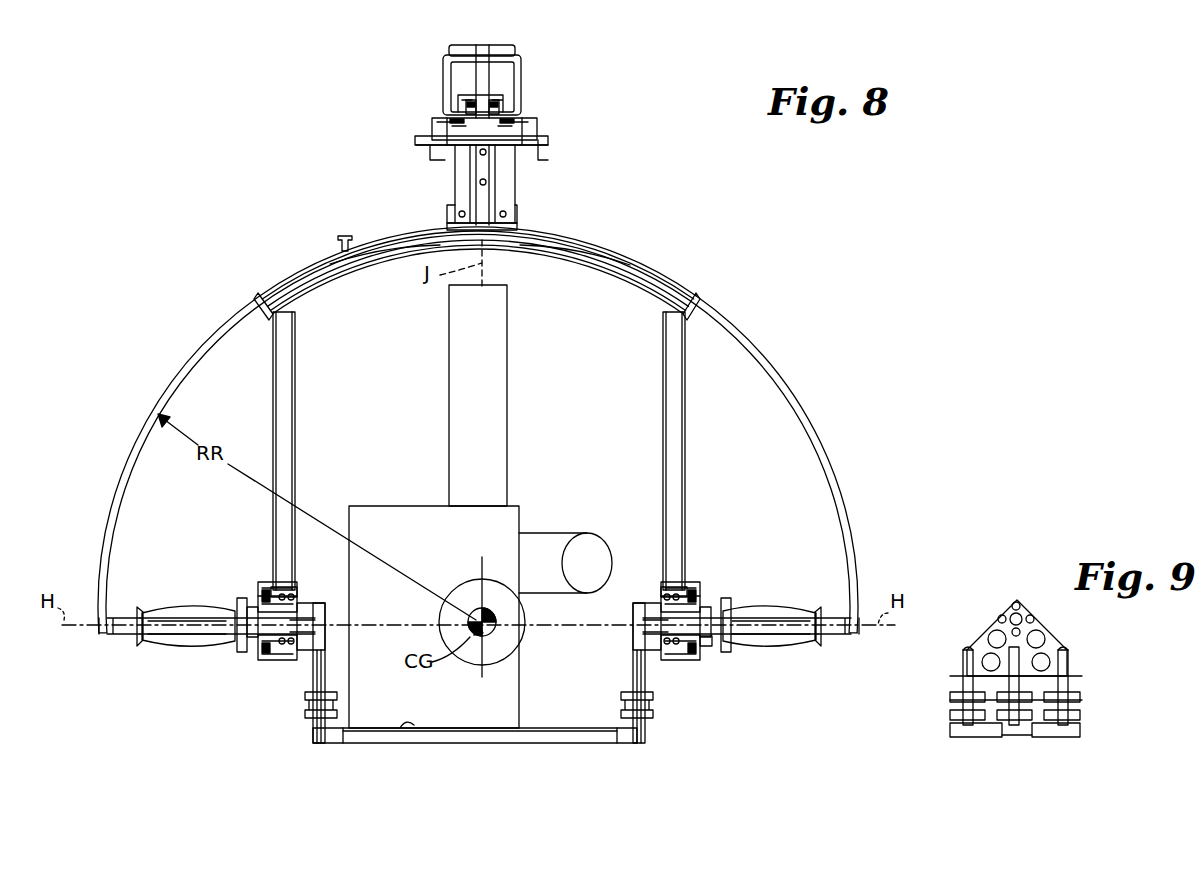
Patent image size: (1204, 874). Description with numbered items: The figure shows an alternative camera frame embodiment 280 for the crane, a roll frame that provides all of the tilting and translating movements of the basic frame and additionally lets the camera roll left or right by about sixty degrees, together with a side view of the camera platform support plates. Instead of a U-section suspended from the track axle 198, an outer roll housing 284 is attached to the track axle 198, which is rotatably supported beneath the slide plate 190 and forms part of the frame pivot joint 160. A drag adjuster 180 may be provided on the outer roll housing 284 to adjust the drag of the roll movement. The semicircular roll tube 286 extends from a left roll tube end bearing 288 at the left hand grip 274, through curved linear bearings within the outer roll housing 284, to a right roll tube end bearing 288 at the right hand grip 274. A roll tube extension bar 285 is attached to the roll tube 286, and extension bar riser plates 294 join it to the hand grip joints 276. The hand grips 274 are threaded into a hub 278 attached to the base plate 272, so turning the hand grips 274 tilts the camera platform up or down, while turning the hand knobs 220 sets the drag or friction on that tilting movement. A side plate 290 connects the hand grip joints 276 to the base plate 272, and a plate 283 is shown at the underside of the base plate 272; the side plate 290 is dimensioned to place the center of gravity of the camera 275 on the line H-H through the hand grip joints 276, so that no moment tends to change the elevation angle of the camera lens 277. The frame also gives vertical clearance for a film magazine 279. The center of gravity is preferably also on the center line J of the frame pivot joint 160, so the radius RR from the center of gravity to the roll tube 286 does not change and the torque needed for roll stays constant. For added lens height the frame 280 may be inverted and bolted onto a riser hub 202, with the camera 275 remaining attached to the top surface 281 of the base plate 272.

In FIG. 8, the frame pivot joint 160 is at (536, 138).
In FIG. 8, the drag adjuster 180 is at (340, 235).
In FIG. 8, the slide plate 190 is at (545, 144).
In FIG. 8, the track axle 198 is at (456, 208).
In FIG. 8, the riser hub 202 is at (443, 80).
In FIG. 8, the hand knob 220 is at (493, 100).
In FIG. 8, the base plate 272 is at (574, 744).
In FIG. 8, the hand grip 274 is at (190, 610).
In FIG. 8, the camera 275 is at (497, 540).
In FIG. 8, the hand grip joint 276 is at (262, 655).
In FIG. 8, the camera lens 277 is at (510, 617).
In FIG. 8, the hub 278 is at (270, 590).
In FIG. 8, the film magazine 279 is at (500, 381).
In FIG. 8, the alternative camera frame embodiment 280 is at (501, 261).
In FIG. 8, the top surface 281 is at (404, 730).
In FIG. 8, the plate 283 is at (474, 744).
In FIG. 8, the outer roll housing 284 is at (598, 244).
In FIG. 8, the roll tube extension bar 285 is at (612, 270).
In FIG. 8, the semicircular roll tube 286 is at (761, 353).
In FIG. 8, the roll tube end bearing 288 is at (119, 636).
In FIG. 8, the side plate 290 is at (647, 658).
In FIG. 9, the side plate 290 is at (963, 686).
In FIG. 8, the post 294 is at (290, 392).